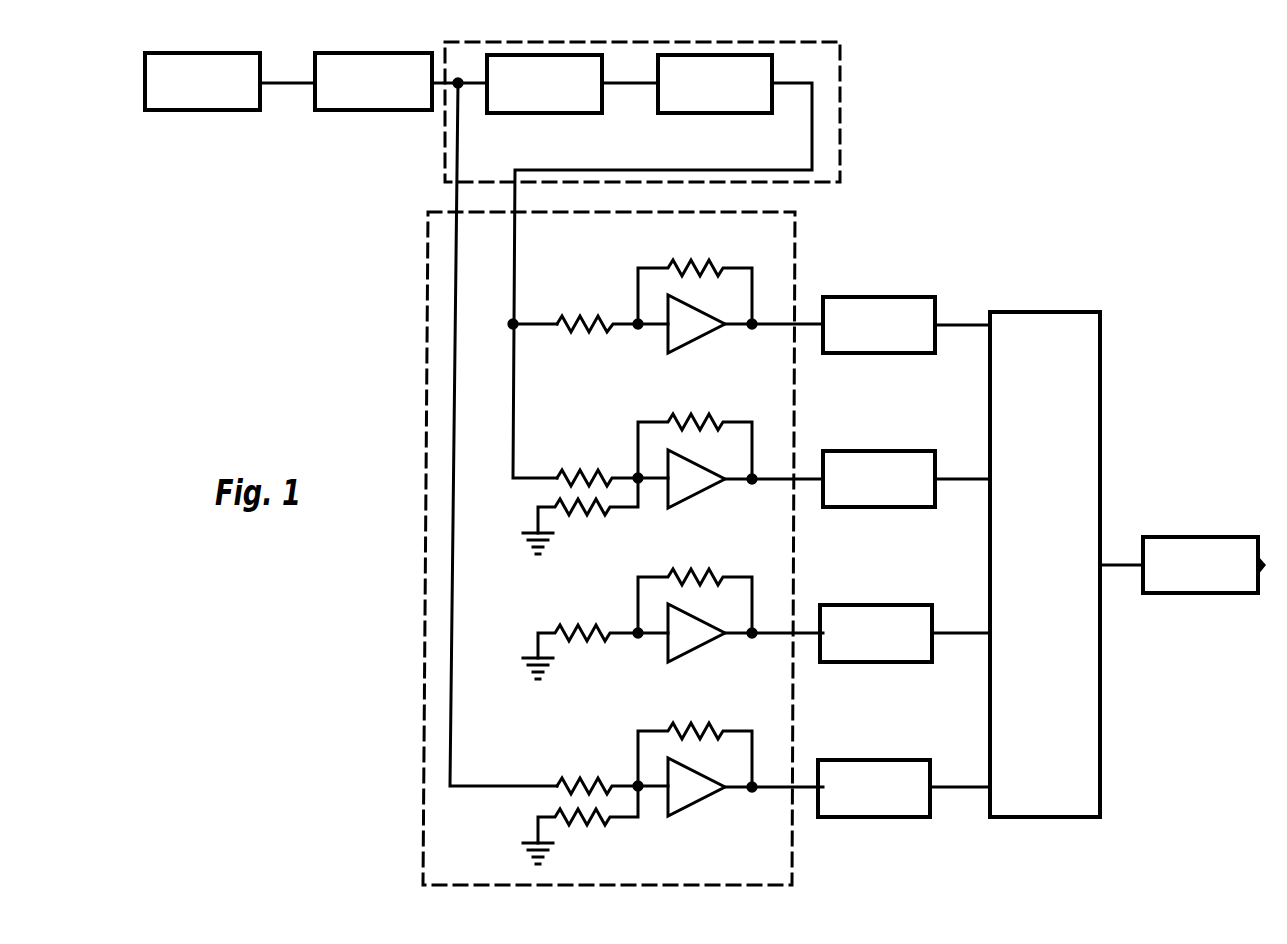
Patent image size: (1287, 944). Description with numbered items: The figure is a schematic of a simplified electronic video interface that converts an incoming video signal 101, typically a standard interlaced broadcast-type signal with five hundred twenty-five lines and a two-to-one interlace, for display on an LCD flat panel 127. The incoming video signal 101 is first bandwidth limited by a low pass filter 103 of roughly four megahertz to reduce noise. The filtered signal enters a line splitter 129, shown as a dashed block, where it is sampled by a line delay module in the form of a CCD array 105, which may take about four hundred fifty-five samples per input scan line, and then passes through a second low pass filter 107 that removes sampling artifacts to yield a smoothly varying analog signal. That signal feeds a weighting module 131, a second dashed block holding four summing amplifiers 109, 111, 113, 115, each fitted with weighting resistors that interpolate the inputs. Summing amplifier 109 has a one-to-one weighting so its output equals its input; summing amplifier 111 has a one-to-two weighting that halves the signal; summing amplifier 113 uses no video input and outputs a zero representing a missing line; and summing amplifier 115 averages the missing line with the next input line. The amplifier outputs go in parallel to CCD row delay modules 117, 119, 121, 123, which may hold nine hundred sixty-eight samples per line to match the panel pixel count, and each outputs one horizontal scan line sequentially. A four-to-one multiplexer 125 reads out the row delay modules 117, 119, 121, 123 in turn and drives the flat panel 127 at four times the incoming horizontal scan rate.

The incoming video signal 101 is at (208, 111).
The low pass filter 103 is at (378, 111).
The CCD array line delay module 105 is at (550, 114).
The second low pass filter 107 is at (720, 114).
The summing amplifier 109 is at (697, 341).
The summing amplifier 111 is at (697, 496).
The summing amplifier 113 is at (697, 650).
The summing amplifier 115 is at (697, 804).
The row delay module 117 is at (884, 354).
The row delay module 119 is at (884, 508).
The row delay module 121 is at (881, 663).
The row delay module 123 is at (879, 818).
The multiplexer 125 is at (1038, 311).
The LCD flat panel display 127 is at (1186, 536).
The line splitter 129 is at (843, 68).
The weighting module 131 is at (797, 252).